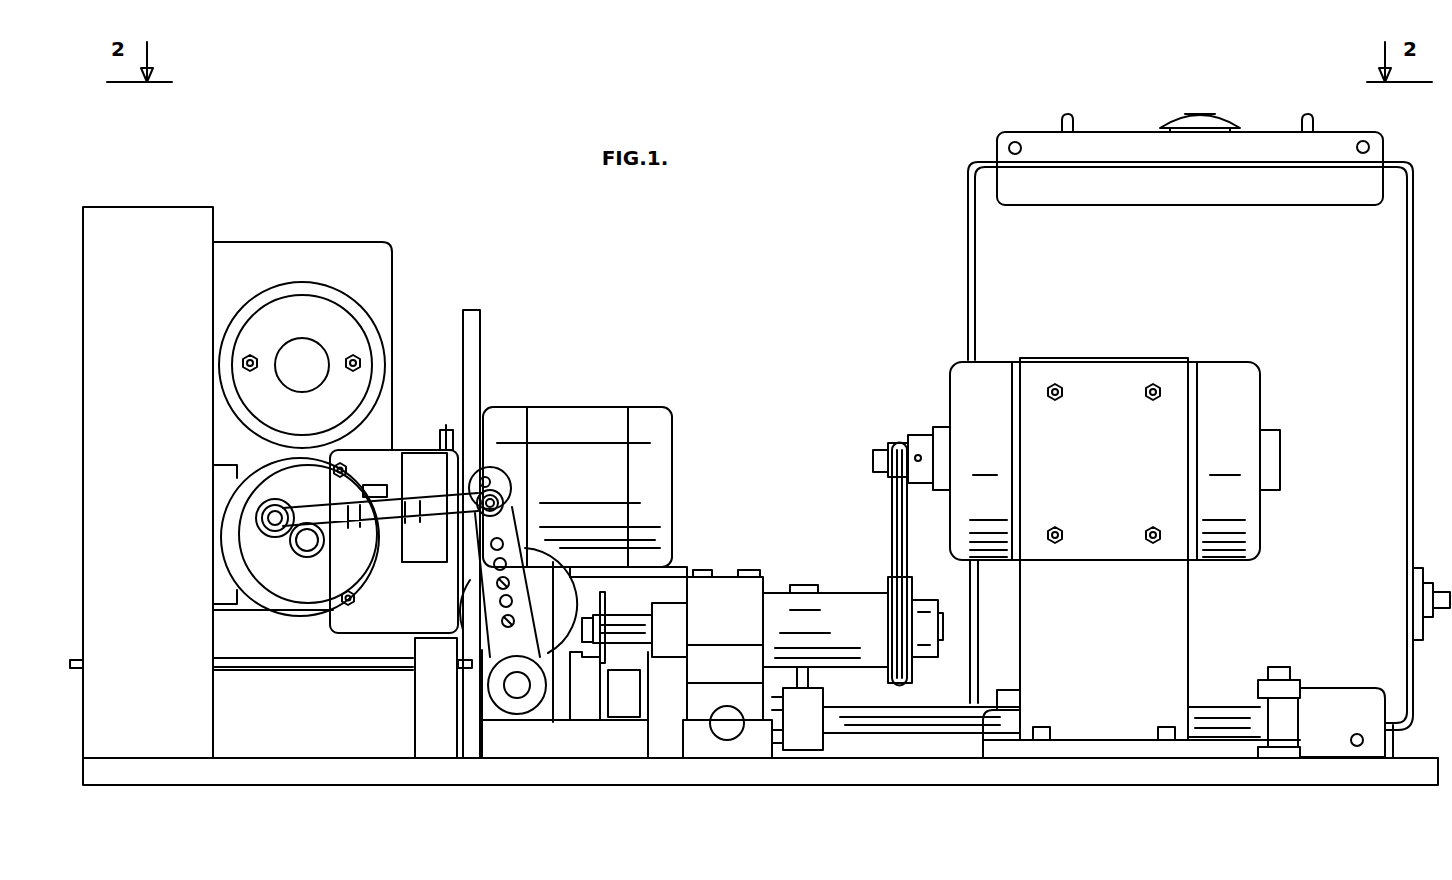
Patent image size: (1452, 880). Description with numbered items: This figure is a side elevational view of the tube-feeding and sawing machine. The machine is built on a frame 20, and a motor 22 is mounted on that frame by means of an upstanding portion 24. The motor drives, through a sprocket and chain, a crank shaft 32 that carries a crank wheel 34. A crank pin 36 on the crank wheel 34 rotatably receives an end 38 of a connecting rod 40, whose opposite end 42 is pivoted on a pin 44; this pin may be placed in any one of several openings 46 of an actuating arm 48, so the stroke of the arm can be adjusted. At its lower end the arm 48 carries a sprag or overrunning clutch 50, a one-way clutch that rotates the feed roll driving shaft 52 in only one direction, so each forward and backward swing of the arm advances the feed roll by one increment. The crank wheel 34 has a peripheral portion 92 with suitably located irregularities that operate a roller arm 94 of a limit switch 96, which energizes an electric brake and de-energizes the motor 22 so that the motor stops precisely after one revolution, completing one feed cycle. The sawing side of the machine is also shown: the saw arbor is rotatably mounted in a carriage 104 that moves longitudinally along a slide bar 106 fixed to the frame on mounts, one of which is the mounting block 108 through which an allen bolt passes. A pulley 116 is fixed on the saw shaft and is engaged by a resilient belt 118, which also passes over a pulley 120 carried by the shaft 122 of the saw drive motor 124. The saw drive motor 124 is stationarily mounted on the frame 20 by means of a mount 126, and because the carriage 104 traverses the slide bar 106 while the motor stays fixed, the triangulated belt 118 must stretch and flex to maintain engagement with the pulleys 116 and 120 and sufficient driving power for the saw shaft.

The frame 20 is at (1068, 750).
The motor 22 is at (345, 333).
The upstanding portion 24 is at (320, 255).
The crank shaft 32 is at (305, 543).
The crank wheel 34 is at (250, 545).
The crank pin 36 is at (262, 495).
The end of connecting rod 38 is at (280, 542).
The connecting rod 40 is at (331, 513).
The opposite end of connecting rod 42 is at (500, 495).
The pin 44 is at (508, 505).
The openings 46 is at (498, 563).
The actuating arm 48 is at (525, 525).
The overrunning clutch 50 is at (497, 683).
The feed roll driving shaft 52 is at (517, 686).
The peripheral portion 92 is at (372, 575).
The roller arm 94 is at (368, 486).
The limit switch 96 is at (422, 453).
The carriage 104 is at (763, 617).
The slide bar 106 is at (727, 723).
The mounting block 108 is at (733, 753).
The pulley 116 is at (907, 647).
The resilient belt 118 is at (900, 690).
The pulley 120 is at (897, 460).
The shaft 122 is at (873, 462).
The saw drive motor 124 is at (1230, 385).
The mount 126 is at (1177, 640).